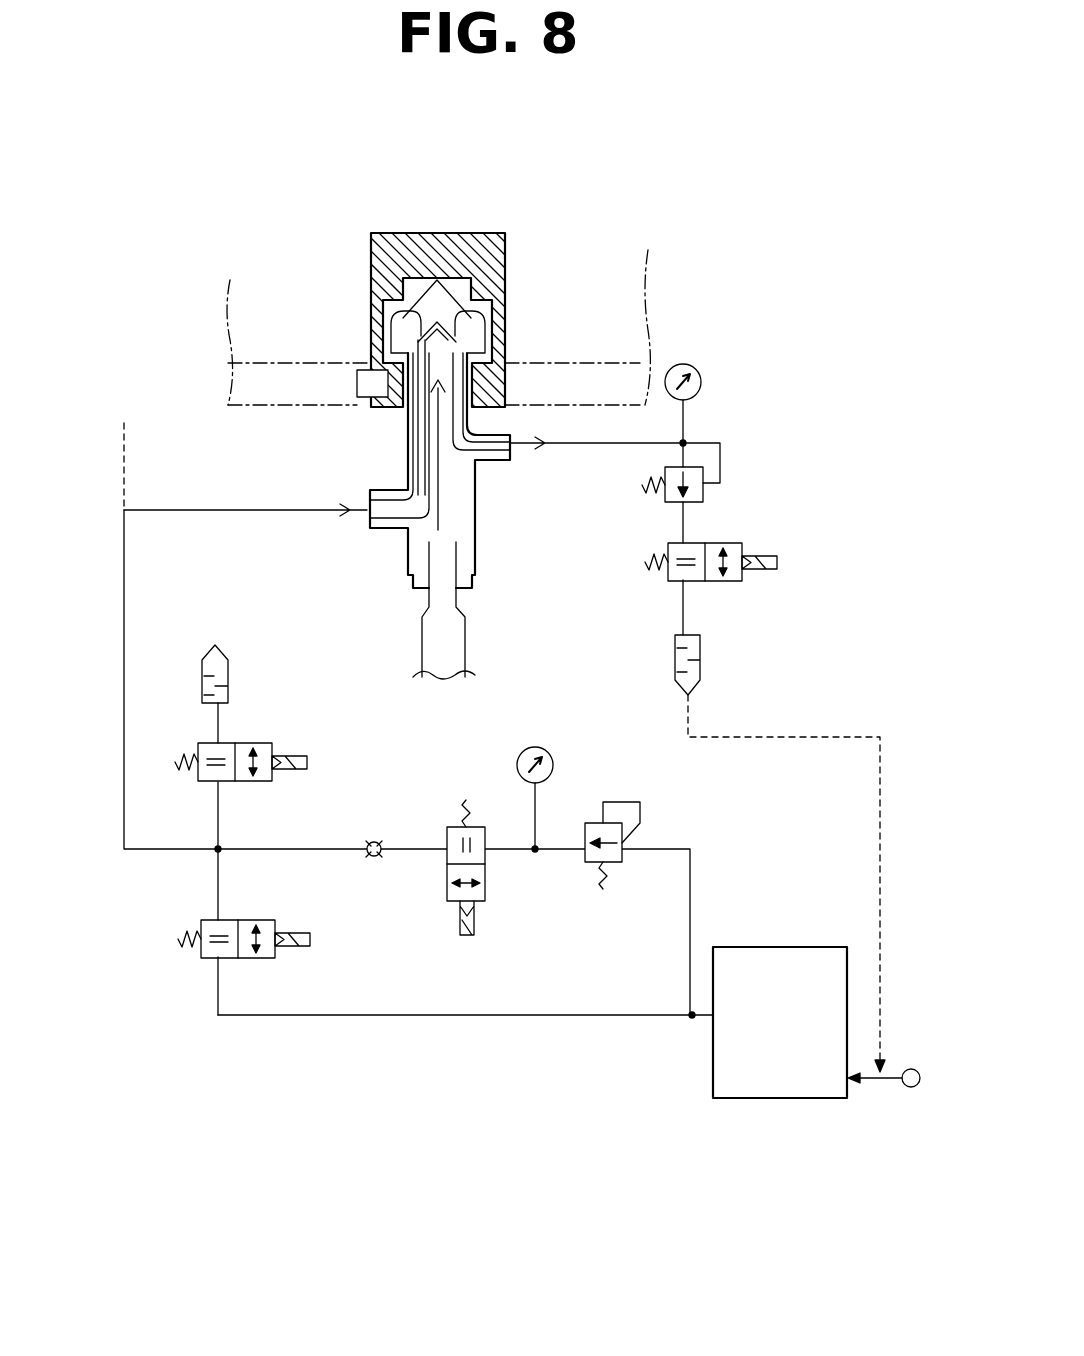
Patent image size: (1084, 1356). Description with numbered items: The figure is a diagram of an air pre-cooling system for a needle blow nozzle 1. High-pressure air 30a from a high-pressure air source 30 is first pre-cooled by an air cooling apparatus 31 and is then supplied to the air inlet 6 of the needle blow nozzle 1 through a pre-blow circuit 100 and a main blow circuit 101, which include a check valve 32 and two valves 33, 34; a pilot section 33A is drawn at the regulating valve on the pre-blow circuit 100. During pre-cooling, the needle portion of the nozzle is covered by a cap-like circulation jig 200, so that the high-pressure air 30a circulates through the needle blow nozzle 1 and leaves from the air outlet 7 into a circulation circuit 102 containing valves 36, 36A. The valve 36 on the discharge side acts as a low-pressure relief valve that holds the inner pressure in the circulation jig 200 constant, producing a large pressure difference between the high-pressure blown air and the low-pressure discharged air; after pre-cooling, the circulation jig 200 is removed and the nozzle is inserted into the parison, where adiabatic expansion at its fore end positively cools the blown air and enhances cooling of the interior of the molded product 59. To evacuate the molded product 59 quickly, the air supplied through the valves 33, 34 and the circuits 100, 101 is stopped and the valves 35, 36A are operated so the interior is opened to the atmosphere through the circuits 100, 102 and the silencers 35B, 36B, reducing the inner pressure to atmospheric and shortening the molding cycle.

The circulation jig 200 is at (490, 232).
The molded product 59 is at (640, 375).
The needle blow nozzle 1 is at (408, 436).
The air inlet 6 is at (370, 498).
The air outlet 7 is at (510, 430).
The valve 36 is at (703, 490).
The valve 36A is at (725, 540).
The silencer 36B is at (700, 658).
The circulation circuit 102 is at (786, 546).
The silencer 35B is at (228, 672).
The valve 35 is at (258, 782).
The valve 34 is at (268, 957).
The check valve 32 is at (379, 839).
The valve 33 is at (485, 892).
The pressure regulator 33A is at (622, 802).
The pre-blow circuit 100 is at (700, 862).
The main blow circuit 101 is at (345, 1022).
The air cooling apparatus 31 is at (745, 1100).
The high-pressure air 30a is at (860, 1086).
The high-pressure air source 30 is at (910, 1090).